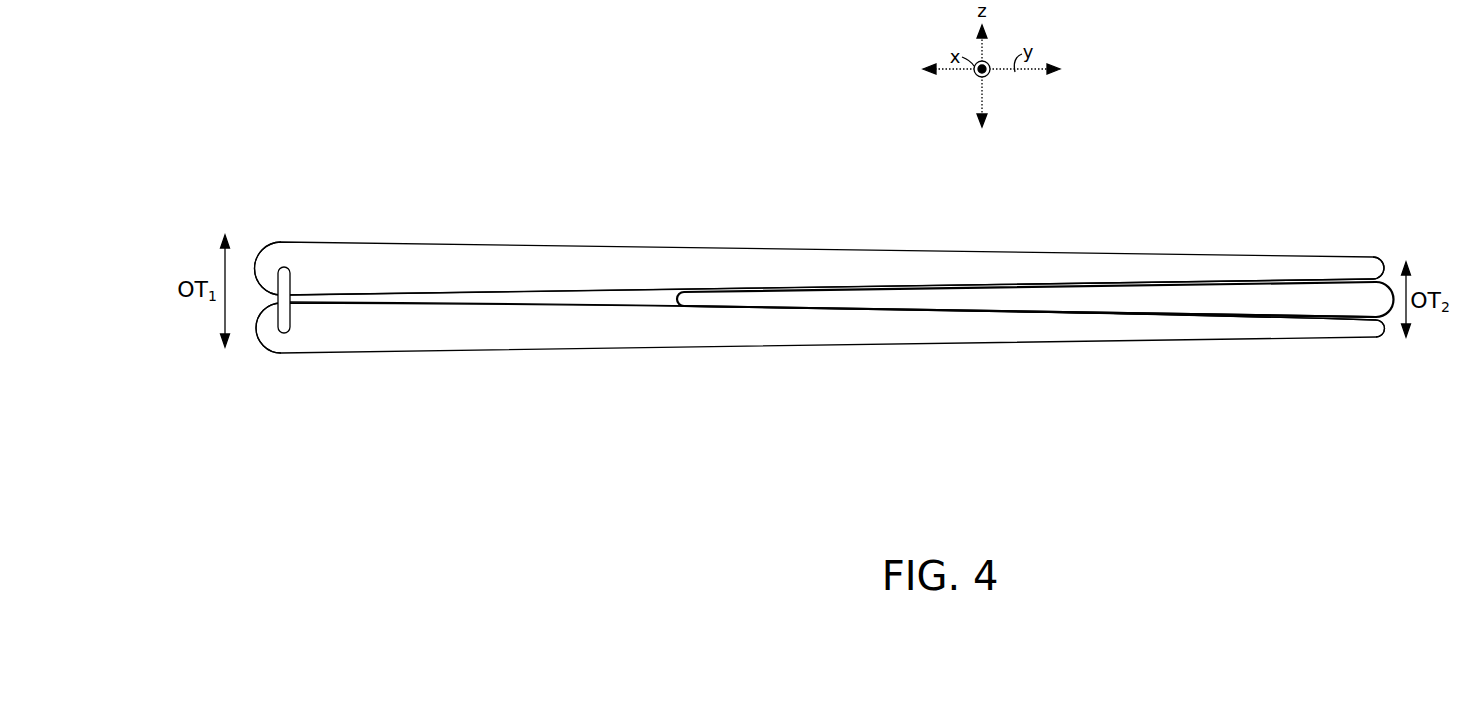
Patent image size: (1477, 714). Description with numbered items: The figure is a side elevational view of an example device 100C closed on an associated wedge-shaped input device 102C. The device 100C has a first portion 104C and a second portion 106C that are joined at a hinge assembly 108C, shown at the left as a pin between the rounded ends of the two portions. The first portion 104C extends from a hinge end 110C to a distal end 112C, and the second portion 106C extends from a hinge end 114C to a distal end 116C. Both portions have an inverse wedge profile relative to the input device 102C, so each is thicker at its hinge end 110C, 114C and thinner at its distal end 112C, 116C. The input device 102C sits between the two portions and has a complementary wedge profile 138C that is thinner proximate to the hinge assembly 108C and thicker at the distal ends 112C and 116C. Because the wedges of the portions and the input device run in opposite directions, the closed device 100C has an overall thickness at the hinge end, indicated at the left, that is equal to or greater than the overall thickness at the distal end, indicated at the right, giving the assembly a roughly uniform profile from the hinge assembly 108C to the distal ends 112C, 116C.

The device 100C is at (743, 305).
The first portion 104C is at (825, 180).
The second portion 106C is at (821, 423).
The input device 102C is at (1035, 315).
The hinge assembly 108C is at (191, 400).
The hinge end 110C is at (289, 203).
The hinge end 114C is at (288, 400).
The distal end 112C is at (1363, 204).
The distal end 116C is at (1355, 394).
The wedge profile 138C is at (1030, 397).